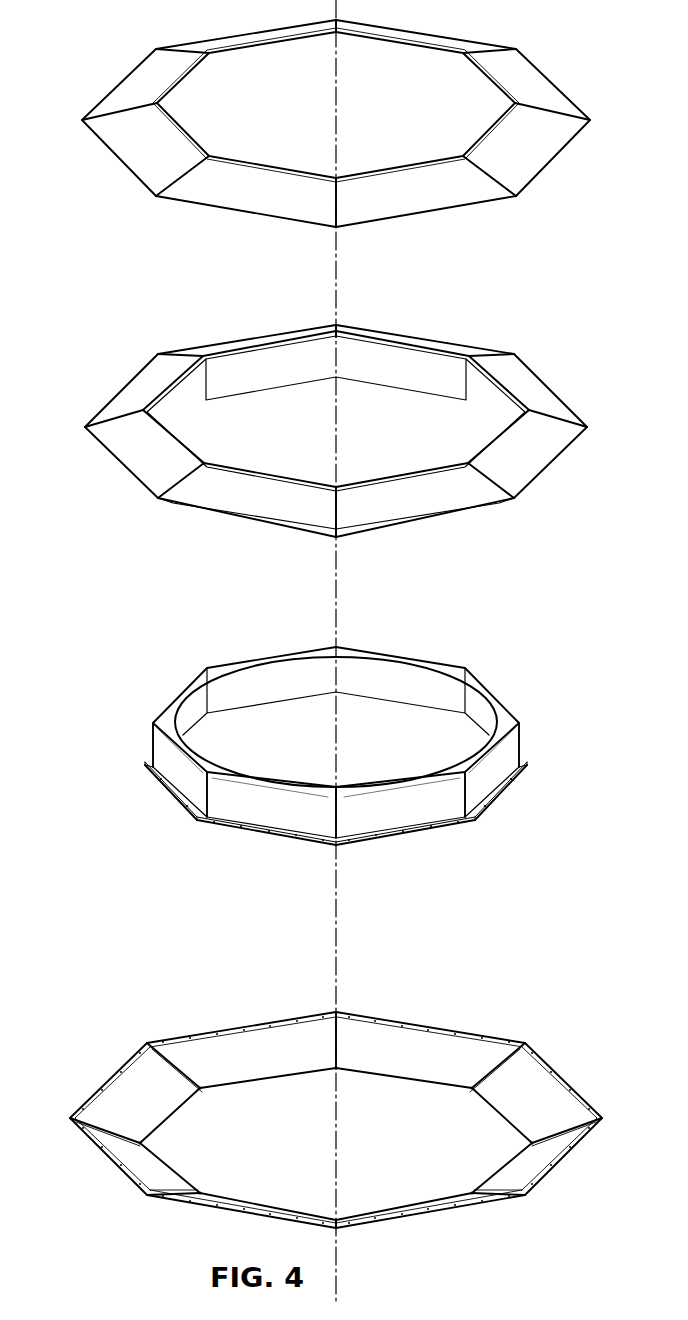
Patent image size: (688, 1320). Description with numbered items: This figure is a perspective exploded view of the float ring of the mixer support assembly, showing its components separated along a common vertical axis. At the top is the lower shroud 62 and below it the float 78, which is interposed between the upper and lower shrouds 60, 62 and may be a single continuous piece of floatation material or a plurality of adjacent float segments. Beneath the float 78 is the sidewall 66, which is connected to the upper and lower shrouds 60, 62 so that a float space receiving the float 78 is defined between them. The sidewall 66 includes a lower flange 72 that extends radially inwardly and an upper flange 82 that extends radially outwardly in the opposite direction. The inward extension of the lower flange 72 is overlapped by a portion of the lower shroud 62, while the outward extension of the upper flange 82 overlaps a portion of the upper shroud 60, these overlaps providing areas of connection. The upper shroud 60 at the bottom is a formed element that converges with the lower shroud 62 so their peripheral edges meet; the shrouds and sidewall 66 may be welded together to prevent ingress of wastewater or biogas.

The upper shroud 60 is at (135, 1090).
The lower shroud 62 is at (137, 80).
The sidewall 66 is at (203, 678).
The lower flange 72 is at (248, 671).
The float 78 is at (135, 390).
The upper flange 82 is at (147, 763).